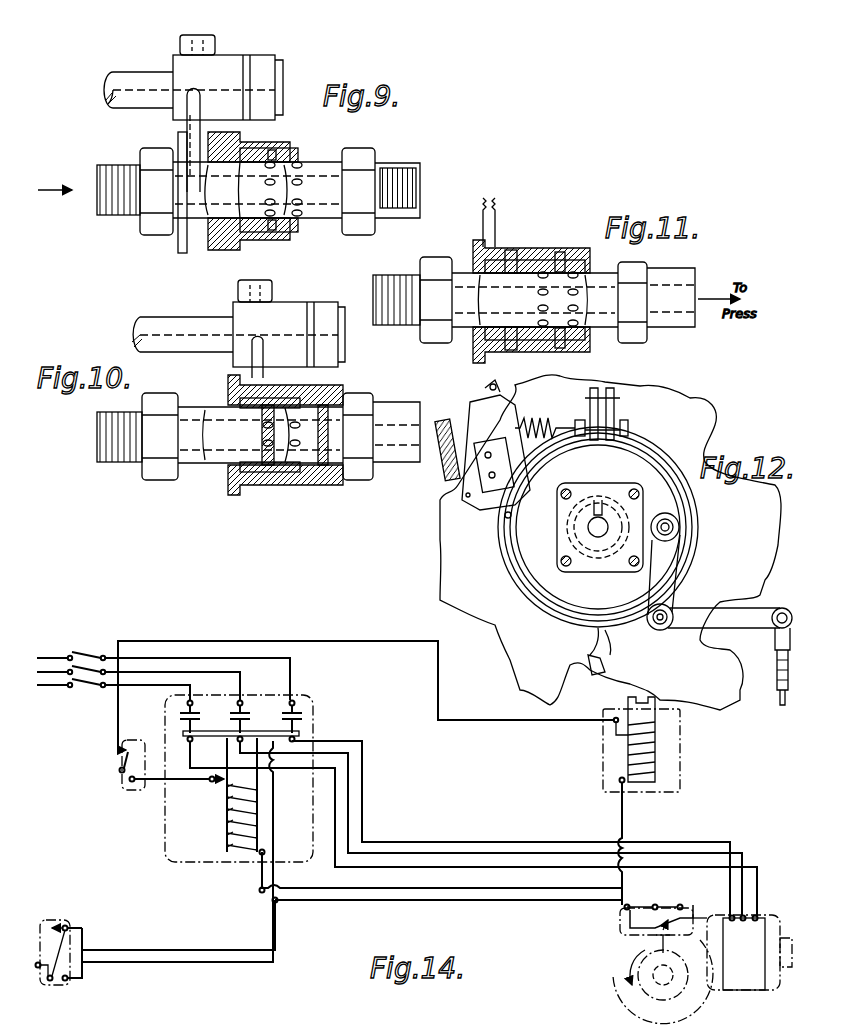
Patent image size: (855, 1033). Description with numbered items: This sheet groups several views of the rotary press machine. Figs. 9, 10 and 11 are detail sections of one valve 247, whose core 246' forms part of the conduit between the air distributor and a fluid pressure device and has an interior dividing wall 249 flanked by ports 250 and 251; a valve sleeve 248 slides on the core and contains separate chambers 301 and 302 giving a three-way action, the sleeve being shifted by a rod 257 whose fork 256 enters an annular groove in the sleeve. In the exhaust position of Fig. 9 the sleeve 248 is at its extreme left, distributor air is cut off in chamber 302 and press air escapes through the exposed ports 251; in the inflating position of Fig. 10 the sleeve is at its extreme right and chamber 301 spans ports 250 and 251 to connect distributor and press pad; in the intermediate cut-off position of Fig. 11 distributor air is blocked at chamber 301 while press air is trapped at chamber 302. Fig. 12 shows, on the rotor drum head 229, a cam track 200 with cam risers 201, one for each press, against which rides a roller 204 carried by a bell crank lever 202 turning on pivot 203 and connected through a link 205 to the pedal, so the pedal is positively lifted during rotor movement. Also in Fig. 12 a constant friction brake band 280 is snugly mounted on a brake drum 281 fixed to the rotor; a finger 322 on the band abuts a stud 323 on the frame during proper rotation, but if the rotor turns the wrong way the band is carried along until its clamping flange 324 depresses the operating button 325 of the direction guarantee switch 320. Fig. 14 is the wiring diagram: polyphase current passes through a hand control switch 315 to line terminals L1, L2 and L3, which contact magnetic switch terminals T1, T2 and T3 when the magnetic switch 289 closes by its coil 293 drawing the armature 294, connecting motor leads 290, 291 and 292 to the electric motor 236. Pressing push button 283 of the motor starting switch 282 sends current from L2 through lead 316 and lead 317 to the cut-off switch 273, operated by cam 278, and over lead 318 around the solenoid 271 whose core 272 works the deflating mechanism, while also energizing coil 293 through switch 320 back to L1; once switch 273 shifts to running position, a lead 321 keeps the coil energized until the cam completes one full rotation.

In FIG. 9, the rod 257 is at (128, 68).
In FIG. 10, the rod 257 is at (152, 325).
In FIG. 9, the fork 256 is at (188, 125).
In FIG. 10, the fork 256 is at (252, 358).
In FIG. 11, the fork 256 is at (497, 210).
In FIG. 9, the port 250 is at (273, 143).
In FIG. 10, the port 250 is at (268, 430).
In FIG. 11, the port 250 is at (585, 240).
In FIG. 9, the valve 247 is at (310, 147).
In FIG. 10, the valve 247 is at (338, 490).
In FIG. 11, the valve 247 is at (533, 300).
In FIG. 9, the port 251 is at (302, 156).
In FIG. 10, the port 251 is at (345, 425).
In FIG. 11, the port 251 is at (577, 292).
In FIG. 9, the dividing wall 249 is at (290, 230).
In FIG. 10, the dividing wall 249 is at (255, 450).
In FIG. 11, the dividing wall 249 is at (595, 300).
In FIG. 9, the core 246' is at (258, 206).
In FIG. 10, the core 246' is at (258, 453).
In FIG. 11, the core 246' is at (536, 312).
In FIG. 9, the chamber 302 is at (262, 245).
In FIG. 10, the chamber 302 is at (325, 488).
In FIG. 11, the chamber 302 is at (585, 224).
In FIG. 9, the valve sleeve 248 is at (230, 245).
In FIG. 10, the valve sleeve 248 is at (305, 400).
In FIG. 11, the valve sleeve 248 is at (482, 345).
In FIG. 10, the chamber 301 is at (292, 492).
In FIG. 11, the chamber 301 is at (510, 256).
In FIG. 12, the drum head 229 is at (702, 432).
In FIG. 12, the brake band 280 is at (634, 440).
In FIG. 12, the brake drum 281 is at (628, 452).
In FIG. 12, the roller 204 is at (678, 500).
In FIG. 12, the bell crank lever 202 is at (690, 605).
In FIG. 12, the pivot 203 is at (760, 645).
In FIG. 12, the link 205 is at (778, 690).
In FIG. 12, the finger 322 is at (618, 636).
In FIG. 12, the stud 323 is at (596, 675).
In FIG. 12, the direction guarantee switch 320 is at (505, 500).
In FIG. 14, the direction guarantee switch 320 is at (124, 795).
In FIG. 12, the clamping flange 324 is at (628, 412).
In FIG. 12, the operating button 325 is at (568, 405).
In FIG. 14, the operating button 325 is at (118, 771).
In FIG. 12, the cam track 200 is at (528, 568).
In FIG. 12, the cam risers 201 is at (548, 578).
In FIG. 14, the hand control switch 315 is at (85, 648).
In FIG. 14, the magnetic switch 289 is at (312, 698).
In FIG. 14, the line terminal L1 is at (188, 703).
In FIG. 14, the line terminal L2 is at (241, 702).
In FIG. 14, the line terminal L3 is at (293, 702).
In FIG. 14, the magnetic switch terminal T1 is at (188, 739).
In FIG. 14, the magnetic switch terminal T2 is at (238, 739).
In FIG. 14, the magnetic switch terminal T3 is at (295, 740).
In FIG. 14, the coil 293 is at (225, 820).
In FIG. 14, the armature 294 is at (242, 850).
In FIG. 14, the motor lead 290 is at (393, 842).
In FIG. 14, the motor lead 291 is at (448, 853).
In FIG. 14, the motor lead 292 is at (513, 866).
In FIG. 14, the lead 316 is at (275, 820).
In FIG. 14, the lead 317 is at (205, 948).
In FIG. 14, the lead 321 is at (468, 892).
In FIG. 14, the lead 318 is at (438, 652).
In FIG. 14, the core 272 is at (655, 702).
In FIG. 14, the solenoid 271 is at (642, 760).
In FIG. 14, the cut-off switch 273 is at (615, 932).
In FIG. 14, the cam 278 is at (642, 985).
In FIG. 14, the electric motor 236 is at (758, 978).
In FIG. 14, the motor starting switch 282 is at (72, 922).
In FIG. 14, the push button 283 is at (36, 966).